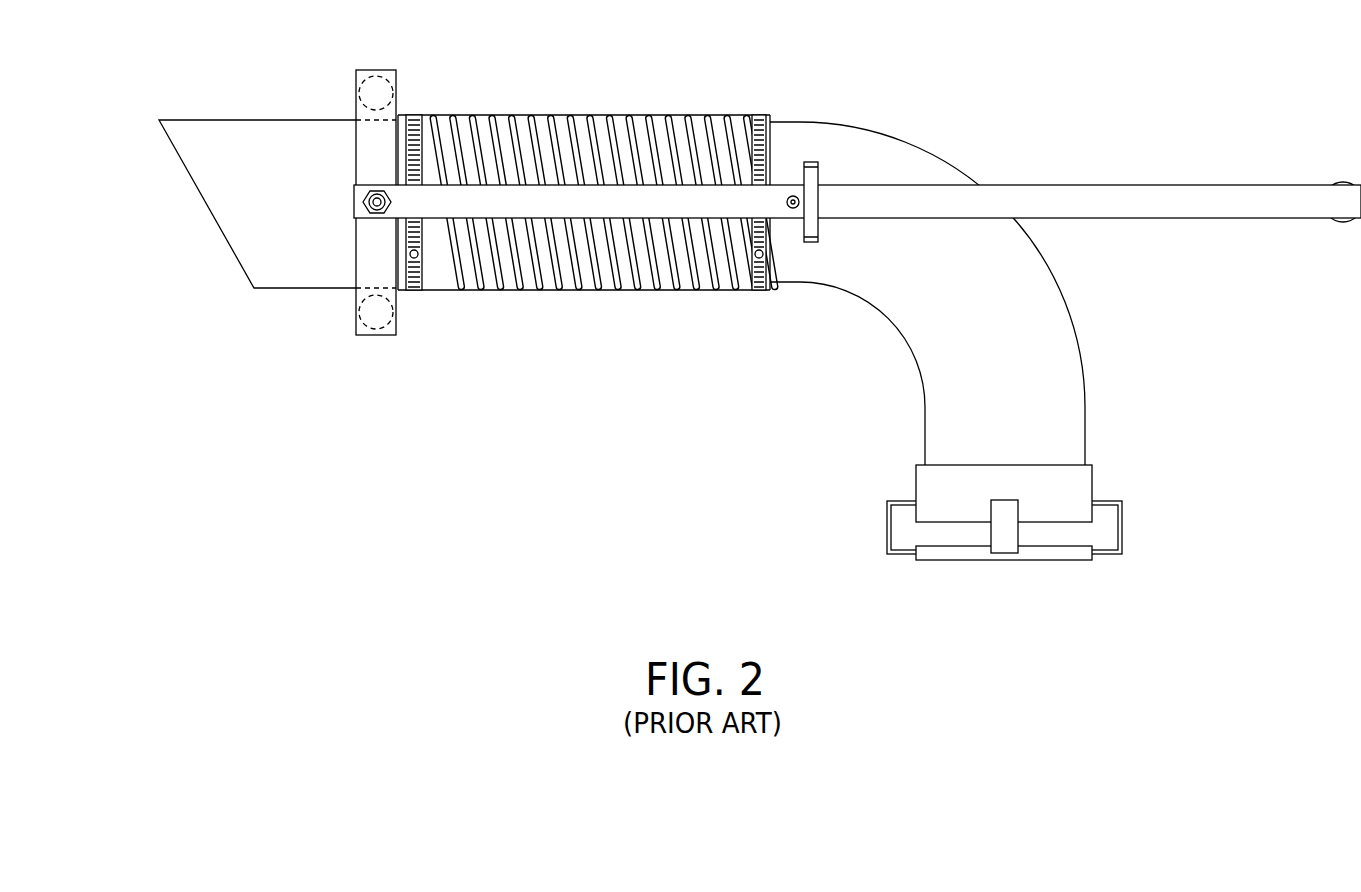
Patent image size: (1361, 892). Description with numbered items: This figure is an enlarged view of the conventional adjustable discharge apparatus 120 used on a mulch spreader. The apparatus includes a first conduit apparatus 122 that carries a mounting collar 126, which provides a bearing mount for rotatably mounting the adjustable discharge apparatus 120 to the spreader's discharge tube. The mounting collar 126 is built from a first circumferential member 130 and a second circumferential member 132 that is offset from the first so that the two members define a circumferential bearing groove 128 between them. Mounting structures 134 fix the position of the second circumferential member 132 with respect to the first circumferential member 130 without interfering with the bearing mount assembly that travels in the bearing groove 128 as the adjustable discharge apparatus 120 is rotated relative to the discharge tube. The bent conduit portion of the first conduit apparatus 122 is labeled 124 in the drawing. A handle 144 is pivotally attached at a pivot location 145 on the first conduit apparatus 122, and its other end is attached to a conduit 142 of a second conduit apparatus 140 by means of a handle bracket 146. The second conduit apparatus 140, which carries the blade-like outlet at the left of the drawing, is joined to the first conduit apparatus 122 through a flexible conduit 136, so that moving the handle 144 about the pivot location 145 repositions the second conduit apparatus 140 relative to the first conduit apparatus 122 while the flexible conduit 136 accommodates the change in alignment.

The conventional adjustable discharge apparatus 120 is at (1110, 65).
The first conduit apparatus 122 is at (1092, 378).
The hose 124 is at (1057, 296).
The mounting collar 126 is at (889, 566).
The circumferential bearing groove 128 is at (943, 532).
The first circumferential member 130 is at (1092, 486).
The second circumferential member 132 is at (1063, 561).
The mounting structures 134 is at (888, 527).
The flexible conduit 136 is at (560, 289).
The second conduit apparatus 140 is at (204, 225).
The conduit 142 is at (296, 289).
The handle 144 is at (1069, 184).
The pivot location 145 is at (793, 196).
The handle bracket 146 is at (405, 292).